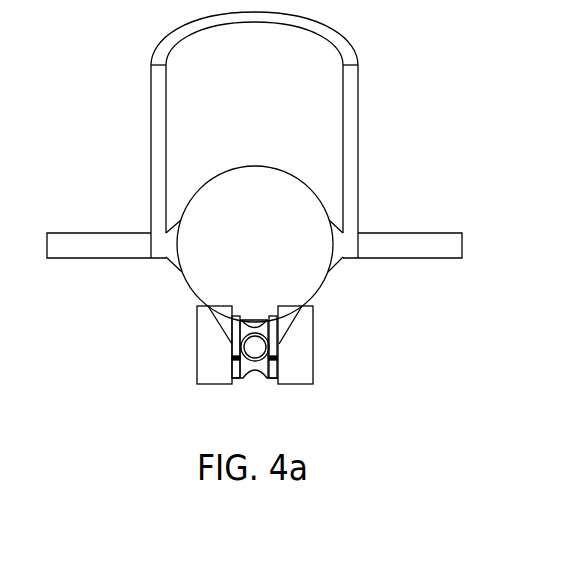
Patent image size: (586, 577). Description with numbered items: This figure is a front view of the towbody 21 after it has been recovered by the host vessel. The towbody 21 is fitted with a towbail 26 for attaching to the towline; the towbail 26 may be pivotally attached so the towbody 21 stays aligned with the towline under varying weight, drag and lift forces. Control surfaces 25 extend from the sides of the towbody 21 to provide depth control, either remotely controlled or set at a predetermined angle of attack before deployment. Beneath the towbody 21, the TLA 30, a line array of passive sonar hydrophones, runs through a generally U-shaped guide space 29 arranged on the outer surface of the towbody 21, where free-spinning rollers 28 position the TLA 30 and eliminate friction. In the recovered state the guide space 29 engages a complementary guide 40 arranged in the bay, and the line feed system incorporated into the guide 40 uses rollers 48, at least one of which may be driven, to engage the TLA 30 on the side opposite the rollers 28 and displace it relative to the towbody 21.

The towbody 21 is at (415, 136).
The control surfaces 25 is at (437, 238).
The towbail 26 is at (333, 40).
The rollers 28 is at (243, 331).
The guide space 29 is at (275, 325).
The TLA 30 is at (257, 347).
The guide 40 is at (208, 362).
The rollers 48 is at (271, 371).